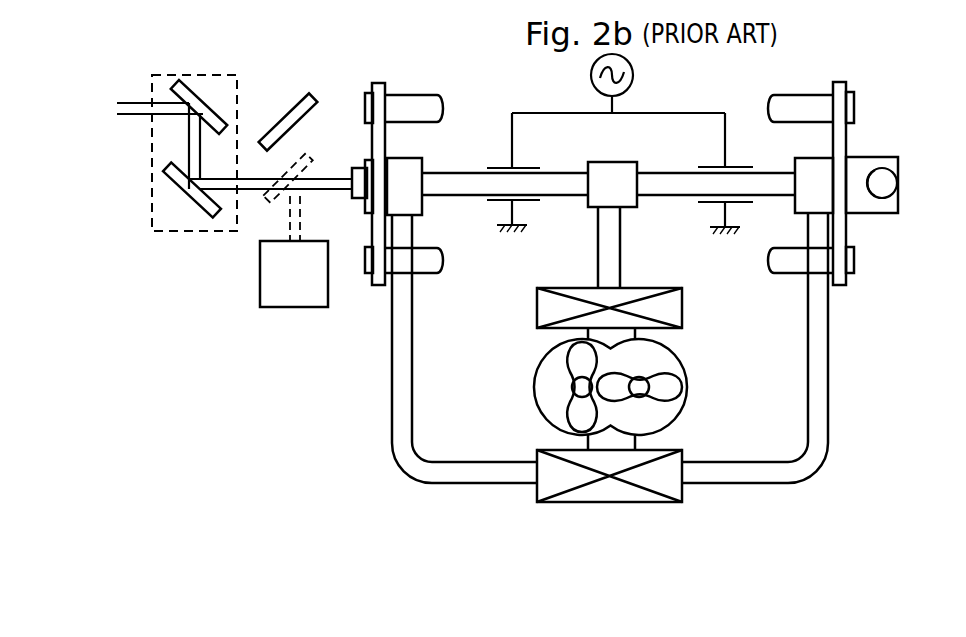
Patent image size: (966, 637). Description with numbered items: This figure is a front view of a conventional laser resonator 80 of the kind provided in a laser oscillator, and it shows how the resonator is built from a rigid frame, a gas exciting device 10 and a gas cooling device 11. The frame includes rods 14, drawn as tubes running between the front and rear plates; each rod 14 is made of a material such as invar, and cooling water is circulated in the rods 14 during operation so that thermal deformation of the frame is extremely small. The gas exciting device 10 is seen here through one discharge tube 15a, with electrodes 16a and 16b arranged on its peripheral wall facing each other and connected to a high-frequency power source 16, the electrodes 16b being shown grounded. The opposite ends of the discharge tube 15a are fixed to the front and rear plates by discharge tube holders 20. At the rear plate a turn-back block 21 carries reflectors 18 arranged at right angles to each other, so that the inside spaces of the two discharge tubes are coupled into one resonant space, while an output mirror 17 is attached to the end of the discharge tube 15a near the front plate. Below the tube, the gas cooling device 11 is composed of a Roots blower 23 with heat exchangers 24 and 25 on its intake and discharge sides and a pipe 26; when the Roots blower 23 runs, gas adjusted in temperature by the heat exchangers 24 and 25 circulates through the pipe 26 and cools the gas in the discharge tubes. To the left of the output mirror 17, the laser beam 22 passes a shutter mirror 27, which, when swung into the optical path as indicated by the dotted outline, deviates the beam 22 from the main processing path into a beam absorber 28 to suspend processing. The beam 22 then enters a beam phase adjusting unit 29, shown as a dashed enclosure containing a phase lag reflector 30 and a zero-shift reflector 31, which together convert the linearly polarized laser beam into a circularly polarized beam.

The gas exciting device 10 is at (518, 252).
The gas cooling device 11 is at (692, 342).
The rods 14 is at (432, 100).
The discharge tube 15a is at (463, 177).
The high-frequency power source 16 is at (635, 70).
The electrode 16a is at (527, 167).
The electrode 16b is at (527, 200).
The output mirror 17 is at (360, 207).
The reflector 18 is at (883, 178).
The discharge tube holder 20 is at (415, 203).
The turn-back block 21 is at (867, 207).
The laser beam 22 is at (132, 103).
The Roots blower 23 is at (680, 413).
The heat exchanger 24 is at (687, 310).
The heat exchanger 25 is at (685, 493).
The pipe 26 is at (428, 475).
The shutter mirror 27 is at (297, 100).
The beam absorber 28 is at (283, 307).
The beam phase adjusting unit 29 is at (197, 231).
The phase lag reflector 30 is at (188, 190).
The zero-shift reflector 31 is at (207, 100).
The laser resonator 80 is at (862, 388).